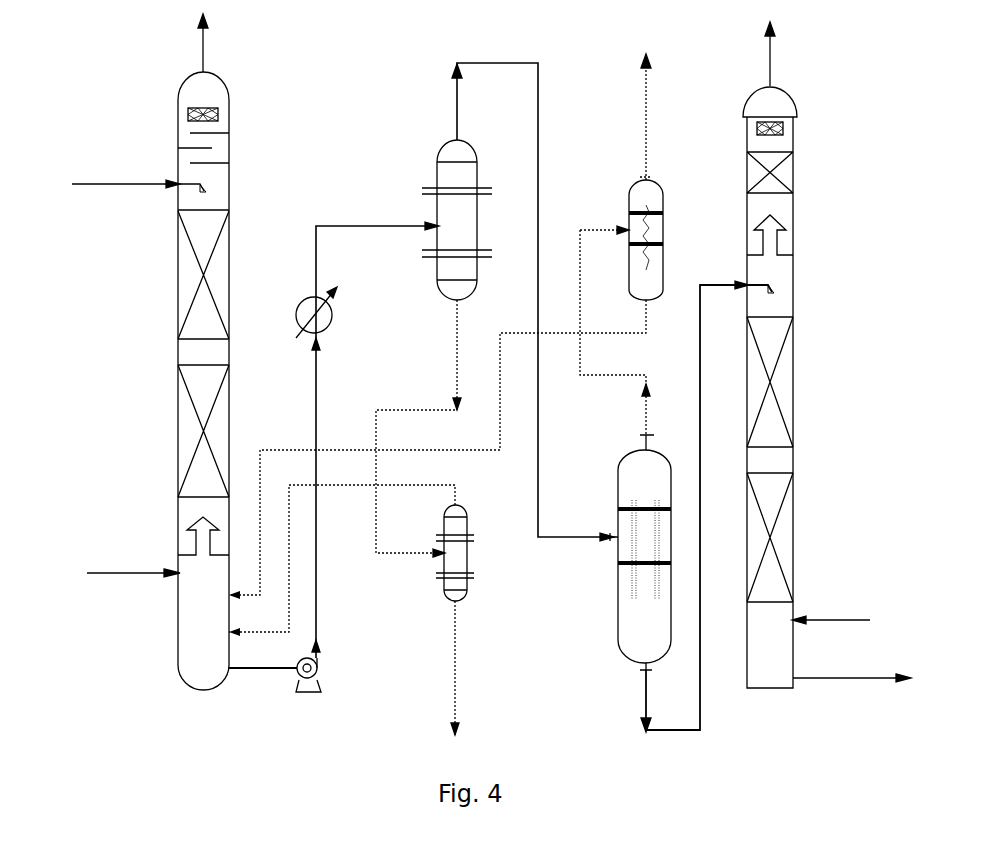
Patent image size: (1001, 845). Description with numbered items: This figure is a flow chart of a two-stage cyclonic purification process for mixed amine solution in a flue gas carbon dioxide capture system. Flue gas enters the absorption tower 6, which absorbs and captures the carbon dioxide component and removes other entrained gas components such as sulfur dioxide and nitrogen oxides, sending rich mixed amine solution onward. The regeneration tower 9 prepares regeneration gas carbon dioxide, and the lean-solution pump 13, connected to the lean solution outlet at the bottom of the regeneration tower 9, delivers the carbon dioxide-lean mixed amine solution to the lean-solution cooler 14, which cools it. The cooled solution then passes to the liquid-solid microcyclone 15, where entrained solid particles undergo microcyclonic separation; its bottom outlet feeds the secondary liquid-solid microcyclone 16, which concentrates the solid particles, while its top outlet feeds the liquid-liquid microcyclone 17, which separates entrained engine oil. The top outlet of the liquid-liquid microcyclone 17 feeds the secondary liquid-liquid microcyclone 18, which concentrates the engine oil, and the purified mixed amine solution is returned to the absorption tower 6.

The absorption tower 6 is at (830, 369).
The regeneration tower 9 is at (166, 368).
The lean-solution pump 13 is at (334, 474).
The lean-solution cooler 14 is at (297, 312).
The liquid-solid microcyclone 15 is at (477, 310).
The secondary liquid-solid microcyclone 16 is at (351, 610).
The liquid-liquid microcyclone 17 is at (639, 506).
The secondary liquid-liquid microcyclone 18 is at (472, 324).